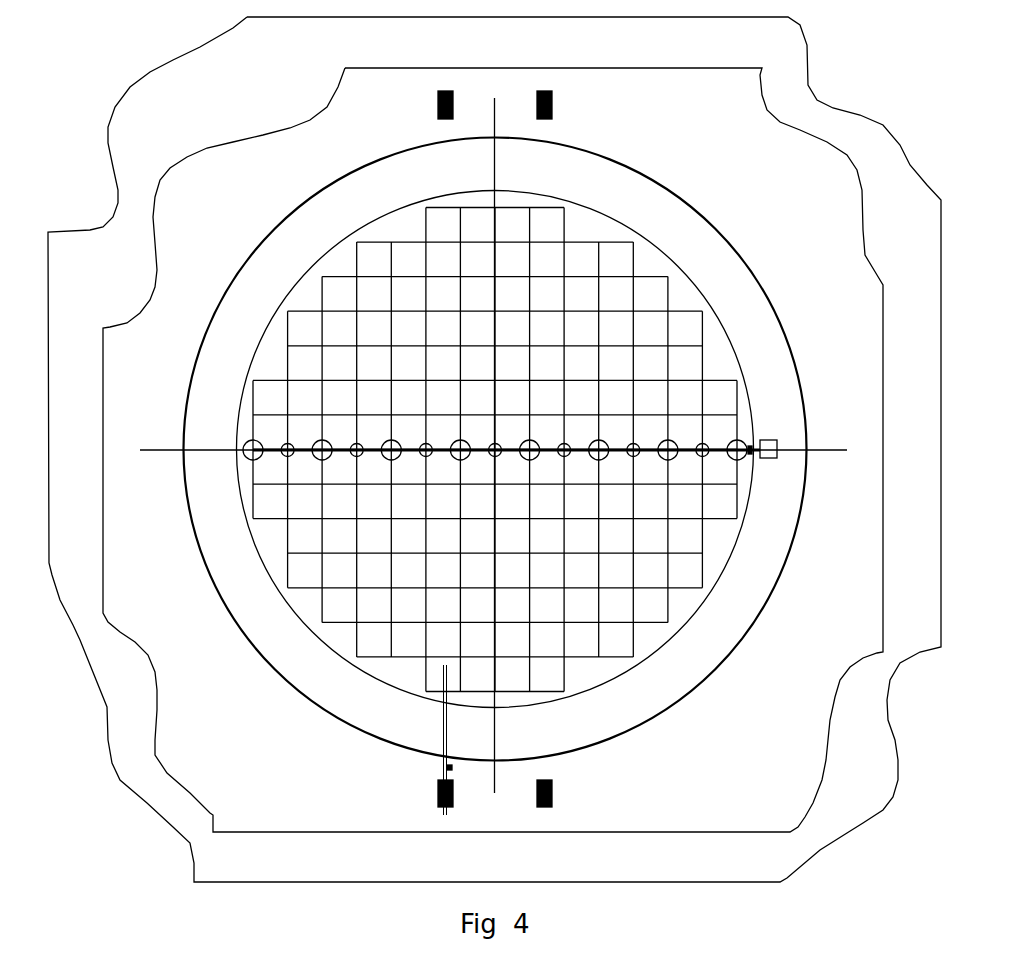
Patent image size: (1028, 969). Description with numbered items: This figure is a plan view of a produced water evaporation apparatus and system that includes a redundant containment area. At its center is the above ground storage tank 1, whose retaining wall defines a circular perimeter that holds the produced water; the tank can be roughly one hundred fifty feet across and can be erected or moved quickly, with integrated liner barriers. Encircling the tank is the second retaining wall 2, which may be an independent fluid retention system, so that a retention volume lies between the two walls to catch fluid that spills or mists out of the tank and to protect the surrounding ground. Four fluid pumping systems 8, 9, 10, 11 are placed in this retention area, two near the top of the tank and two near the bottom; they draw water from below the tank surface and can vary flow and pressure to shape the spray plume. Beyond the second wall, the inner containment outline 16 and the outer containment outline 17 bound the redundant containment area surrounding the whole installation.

The wafer 1 is at (688, 270).
The wafer carrier ring 2 is at (782, 327).
The first sensor 8 is at (438, 91).
The second sensor 9 is at (552, 91).
The third sensor 10 is at (438, 807).
The fourth sensor 11 is at (552, 807).
The inner housing wall 16 is at (883, 378).
The outer housing wall 17 is at (910, 542).